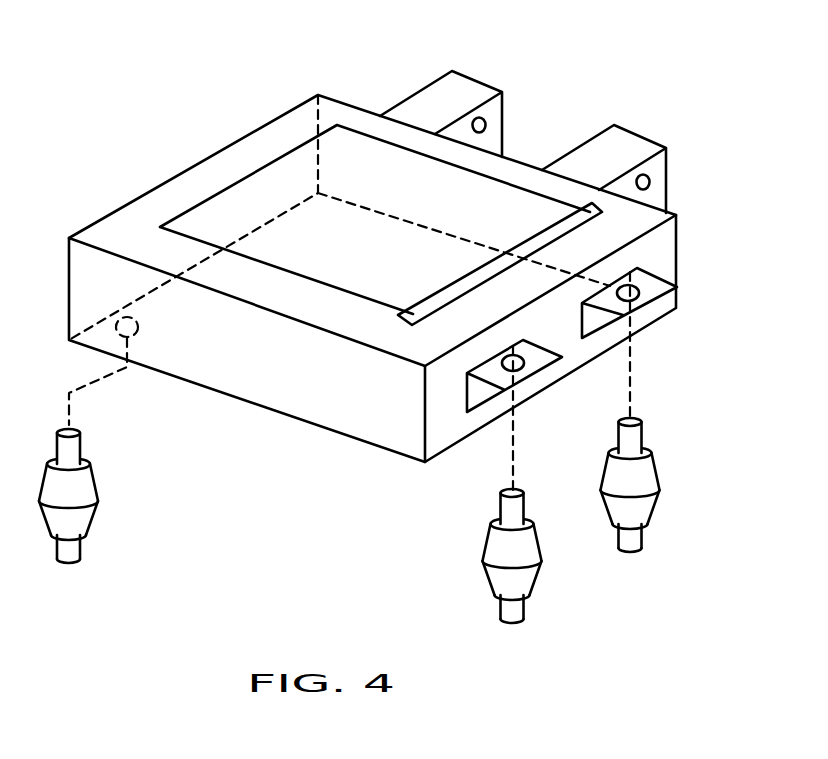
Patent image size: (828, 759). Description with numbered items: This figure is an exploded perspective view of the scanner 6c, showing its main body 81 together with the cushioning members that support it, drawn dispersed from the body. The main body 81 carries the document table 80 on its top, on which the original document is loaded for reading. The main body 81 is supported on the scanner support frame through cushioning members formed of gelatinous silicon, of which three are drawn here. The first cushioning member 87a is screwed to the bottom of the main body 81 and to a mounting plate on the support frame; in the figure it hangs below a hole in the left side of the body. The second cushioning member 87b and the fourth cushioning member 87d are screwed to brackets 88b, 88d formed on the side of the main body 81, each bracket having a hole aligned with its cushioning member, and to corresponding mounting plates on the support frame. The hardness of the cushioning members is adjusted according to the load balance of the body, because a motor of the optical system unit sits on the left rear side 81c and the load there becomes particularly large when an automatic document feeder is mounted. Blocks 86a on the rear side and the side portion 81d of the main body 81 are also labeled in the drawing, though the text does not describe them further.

The scanner 6c is at (193, 131).
The document table 80 is at (472, 185).
The main body 81 is at (115, 221).
The left rear side 81c is at (346, 110).
The frame side portion 81d is at (648, 327).
The mounting block 86a is at (651, 182).
The first cushioning member 87a is at (97, 485).
The second cushioning member 87b is at (537, 582).
The fourth cushioning member 87d is at (657, 470).
The bracket 88b is at (537, 363).
The bracket 88d is at (667, 292).